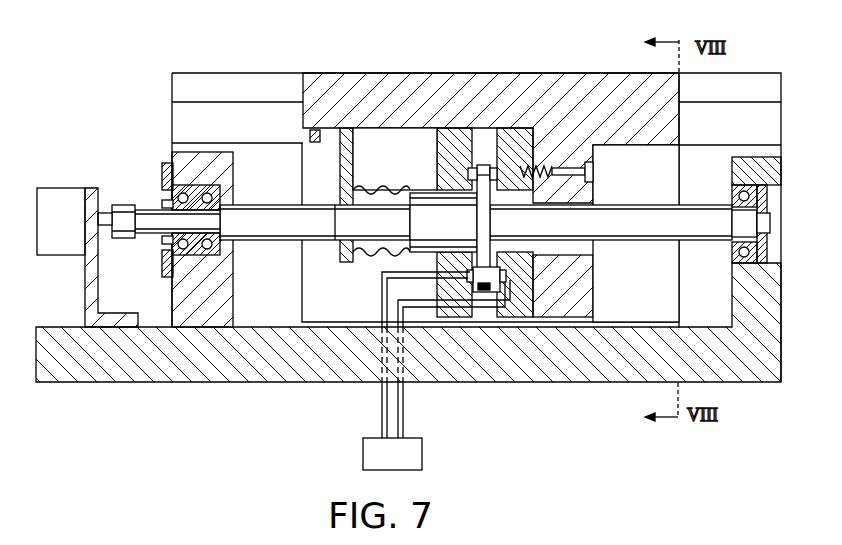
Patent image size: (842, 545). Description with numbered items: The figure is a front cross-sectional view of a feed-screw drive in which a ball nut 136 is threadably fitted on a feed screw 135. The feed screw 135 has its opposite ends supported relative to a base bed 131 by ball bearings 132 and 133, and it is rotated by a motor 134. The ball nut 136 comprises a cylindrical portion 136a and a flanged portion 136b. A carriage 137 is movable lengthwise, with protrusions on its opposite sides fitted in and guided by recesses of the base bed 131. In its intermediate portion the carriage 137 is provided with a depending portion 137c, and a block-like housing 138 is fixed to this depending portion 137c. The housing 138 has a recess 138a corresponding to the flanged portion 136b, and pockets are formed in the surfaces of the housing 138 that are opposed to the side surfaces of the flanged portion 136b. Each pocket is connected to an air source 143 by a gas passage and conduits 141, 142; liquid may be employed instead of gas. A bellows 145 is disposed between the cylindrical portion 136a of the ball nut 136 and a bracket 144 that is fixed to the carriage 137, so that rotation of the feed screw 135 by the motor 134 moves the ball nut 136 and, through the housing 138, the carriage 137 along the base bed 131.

The base bed 131 is at (597, 373).
The ball bearing 132 is at (162, 178).
The ball bearing 133 is at (742, 185).
The motor 134 is at (55, 192).
The feed screw 135 is at (265, 232).
The ball nut 136 is at (416, 158).
The cylindrical portion 136a is at (468, 231).
The flanged portion 136b is at (488, 160).
The carriage 137 is at (594, 80).
The depending portion 137c is at (587, 286).
The housing 138 is at (517, 307).
The recess 138a is at (480, 293).
The conduit 141 is at (380, 408).
The conduit 142 is at (405, 417).
The air source 143 is at (416, 453).
The bracket 144 is at (315, 135).
The bellows 145 is at (373, 185).